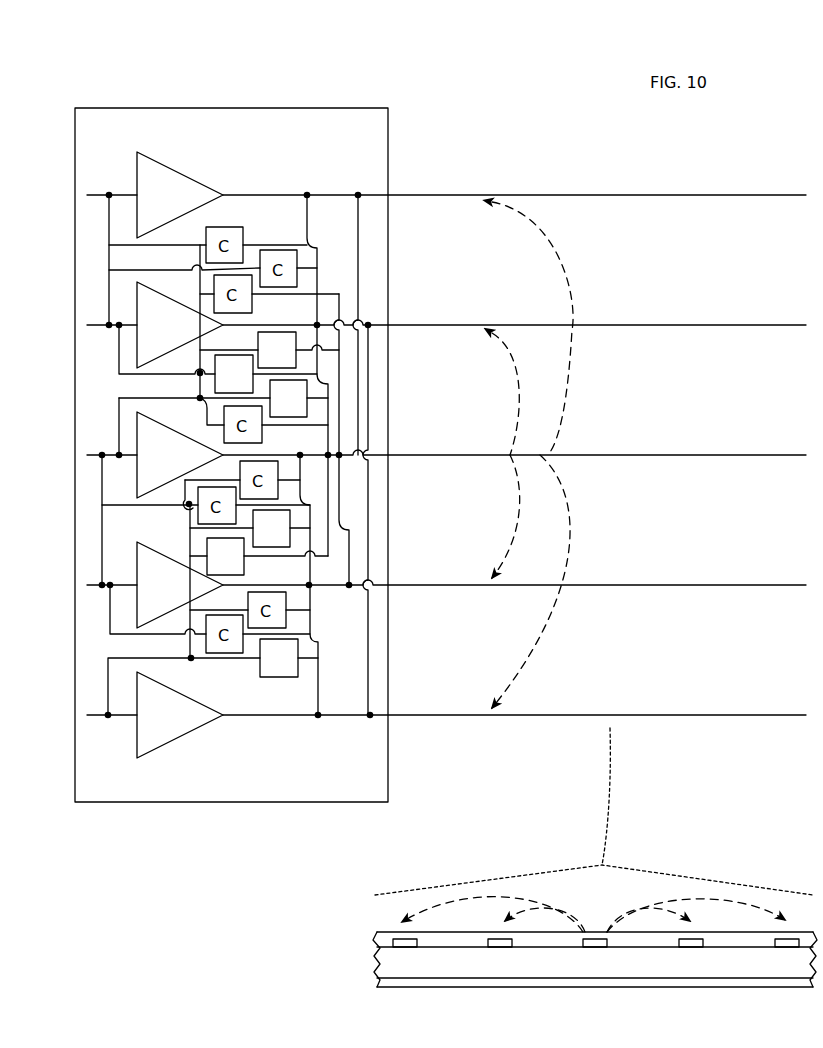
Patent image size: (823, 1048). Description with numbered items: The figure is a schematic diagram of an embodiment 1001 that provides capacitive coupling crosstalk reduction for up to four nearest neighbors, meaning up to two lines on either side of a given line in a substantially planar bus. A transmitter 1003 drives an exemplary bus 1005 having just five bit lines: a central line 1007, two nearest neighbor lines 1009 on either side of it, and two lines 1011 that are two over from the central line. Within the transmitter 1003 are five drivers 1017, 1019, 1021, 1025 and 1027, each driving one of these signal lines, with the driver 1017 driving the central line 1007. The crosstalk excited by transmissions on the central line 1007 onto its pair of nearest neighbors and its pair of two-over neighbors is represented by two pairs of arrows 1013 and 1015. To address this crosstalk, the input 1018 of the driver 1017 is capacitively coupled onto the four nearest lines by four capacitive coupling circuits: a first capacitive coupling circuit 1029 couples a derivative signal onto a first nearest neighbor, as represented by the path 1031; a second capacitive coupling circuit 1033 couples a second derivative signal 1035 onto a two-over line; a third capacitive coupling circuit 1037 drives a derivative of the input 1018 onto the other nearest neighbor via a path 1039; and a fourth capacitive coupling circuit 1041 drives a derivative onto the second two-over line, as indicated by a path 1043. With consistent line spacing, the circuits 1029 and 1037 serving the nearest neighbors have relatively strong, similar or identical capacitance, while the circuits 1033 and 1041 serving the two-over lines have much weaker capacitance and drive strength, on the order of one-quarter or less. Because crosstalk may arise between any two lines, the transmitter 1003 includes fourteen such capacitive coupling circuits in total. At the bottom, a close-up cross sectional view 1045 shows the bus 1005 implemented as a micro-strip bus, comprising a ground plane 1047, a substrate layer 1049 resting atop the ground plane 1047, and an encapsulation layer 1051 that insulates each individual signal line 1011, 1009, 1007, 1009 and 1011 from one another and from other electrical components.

The embodiment 1001 is at (140, 76).
The transmitter 1003 is at (343, 108).
The bus 1005 is at (547, 171).
The central line 1007 is at (633, 455).
The nearest neighbor line 1009 is at (635, 325).
The two over line 1011 is at (635, 195).
The arrows 1013 is at (512, 347).
The arrows 1015 is at (558, 257).
The driver 1017 is at (137, 438).
The input 1018 is at (96, 455).
The driver 1019 is at (223, 327).
The driver 1021 is at (137, 222).
The driver 1025 is at (137, 612).
The driver 1027 is at (137, 695).
The first capacitive coupling circuit 1029 is at (272, 392).
The derivative signal path 1031 is at (255, 386).
The second capacitive coupling circuit 1033 is at (260, 350).
The second derivative signal 1035 is at (362, 240).
The third capacitive coupling circuit 1037 is at (189, 506).
The path 1039 is at (292, 530).
The fourth capacitive coupling circuit 1041 is at (207, 548).
The path 1043 is at (352, 575).
The cross sectional view 1045 is at (729, 857).
The ground plane 1047 is at (377, 985).
The substrate layer 1049 is at (377, 962).
The encapsulation layer 1051 is at (377, 932).